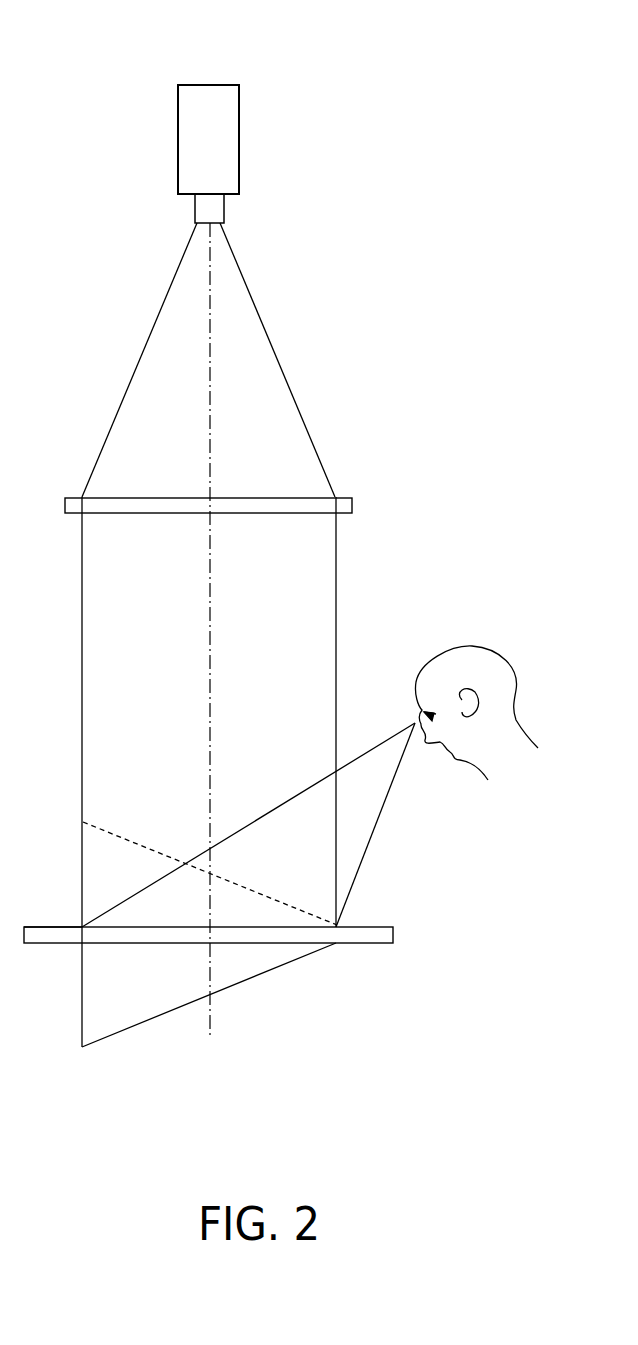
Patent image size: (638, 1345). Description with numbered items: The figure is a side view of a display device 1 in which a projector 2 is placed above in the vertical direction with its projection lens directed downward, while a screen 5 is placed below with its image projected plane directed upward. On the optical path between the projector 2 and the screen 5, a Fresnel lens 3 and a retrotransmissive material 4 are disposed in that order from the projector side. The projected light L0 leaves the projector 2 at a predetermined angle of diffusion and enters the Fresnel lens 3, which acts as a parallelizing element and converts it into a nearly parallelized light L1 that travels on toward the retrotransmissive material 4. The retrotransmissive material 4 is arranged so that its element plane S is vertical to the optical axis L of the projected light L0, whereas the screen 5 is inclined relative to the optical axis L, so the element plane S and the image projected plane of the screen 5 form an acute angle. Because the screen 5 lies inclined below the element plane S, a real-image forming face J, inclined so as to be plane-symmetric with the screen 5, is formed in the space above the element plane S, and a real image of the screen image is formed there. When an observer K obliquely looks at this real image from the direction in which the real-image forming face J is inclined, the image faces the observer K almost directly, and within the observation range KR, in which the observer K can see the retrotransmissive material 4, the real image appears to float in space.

The display device 1 is at (92, 78).
The projector 2 is at (239, 143).
The Fresnel lens 3 is at (343, 503).
The projected light L0 is at (283, 377).
The nearly parallelized light L1 is at (337, 602).
The optical axis L is at (210, 648).
The observer K is at (507, 675).
The real-image forming face J is at (133, 843).
The observation range KR is at (337, 925).
The element plane S is at (40, 925).
The retrotransmissive material 4 is at (372, 943).
The screen 5 is at (250, 980).